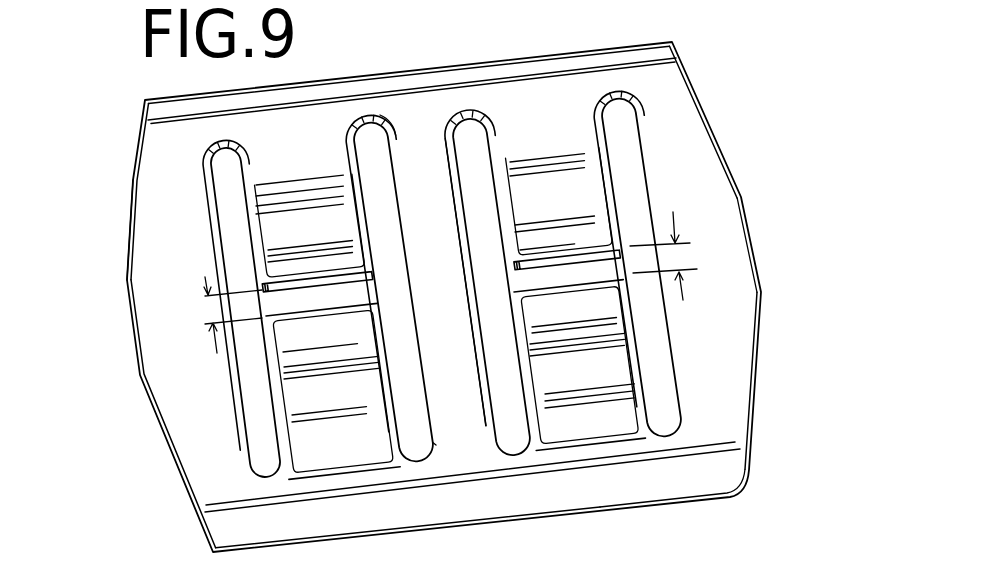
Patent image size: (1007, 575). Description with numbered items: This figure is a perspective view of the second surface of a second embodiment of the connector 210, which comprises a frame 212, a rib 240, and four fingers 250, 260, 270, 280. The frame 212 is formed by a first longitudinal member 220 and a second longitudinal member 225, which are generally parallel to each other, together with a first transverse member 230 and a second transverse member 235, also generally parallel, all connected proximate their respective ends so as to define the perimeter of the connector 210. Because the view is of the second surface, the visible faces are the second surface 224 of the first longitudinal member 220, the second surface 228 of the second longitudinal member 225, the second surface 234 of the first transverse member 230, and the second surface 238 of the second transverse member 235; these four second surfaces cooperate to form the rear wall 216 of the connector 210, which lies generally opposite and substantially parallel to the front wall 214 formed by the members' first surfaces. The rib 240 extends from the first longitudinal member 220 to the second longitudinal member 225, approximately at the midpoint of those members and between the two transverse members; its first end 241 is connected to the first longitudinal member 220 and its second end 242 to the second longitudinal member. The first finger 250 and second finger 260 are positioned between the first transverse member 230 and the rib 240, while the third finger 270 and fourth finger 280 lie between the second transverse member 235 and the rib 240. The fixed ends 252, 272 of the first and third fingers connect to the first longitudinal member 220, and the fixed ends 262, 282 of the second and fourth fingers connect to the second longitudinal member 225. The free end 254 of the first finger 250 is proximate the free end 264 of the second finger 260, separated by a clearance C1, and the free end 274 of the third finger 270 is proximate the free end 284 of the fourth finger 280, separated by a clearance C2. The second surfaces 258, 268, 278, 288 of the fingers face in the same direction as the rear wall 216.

The connector 210 is at (798, 153).
The frame 212 is at (720, 428).
The front wall 214 is at (425, 21).
The rear wall 216 is at (705, 188).
The first longitudinal member 220 is at (367, 90).
The second surface of first longitudinal member 224 is at (163, 107).
The second longitudinal member 225 is at (550, 525).
The second surface of second longitudinal member 228 is at (385, 512).
The first transverse member 230 is at (150, 250).
The second surface of first transverse member 234 is at (158, 313).
The second transverse member 235 is at (724, 253).
The second surface of second transverse member 238 is at (728, 303).
The rib 240 is at (423, 160).
The first end of rib 241 is at (408, 117).
The second end of rib 242 is at (463, 445).
The first finger 250 is at (277, 187).
The fixed end of first finger 252 is at (273, 137).
The free end of first finger 254 is at (313, 280).
The second surface of first finger 258 is at (270, 203).
The second finger 260 is at (303, 391).
The fixed end of second finger 262 is at (307, 465).
The free end of second finger 264 is at (295, 313).
The second surface of second finger 268 is at (307, 437).
The third finger 270 is at (573, 182).
The fixed end of third finger 272 is at (580, 100).
The free end of third finger 274 is at (593, 233).
The second surface of third finger 278 is at (560, 157).
The fourth finger 280 is at (620, 360).
The fixed end of fourth finger 282 is at (630, 437).
The free end of fourth finger 284 is at (550, 287).
The second surface of fourth finger 288 is at (610, 386).
The clearance C1 is at (225, 299).
The clearance C2 is at (663, 242).